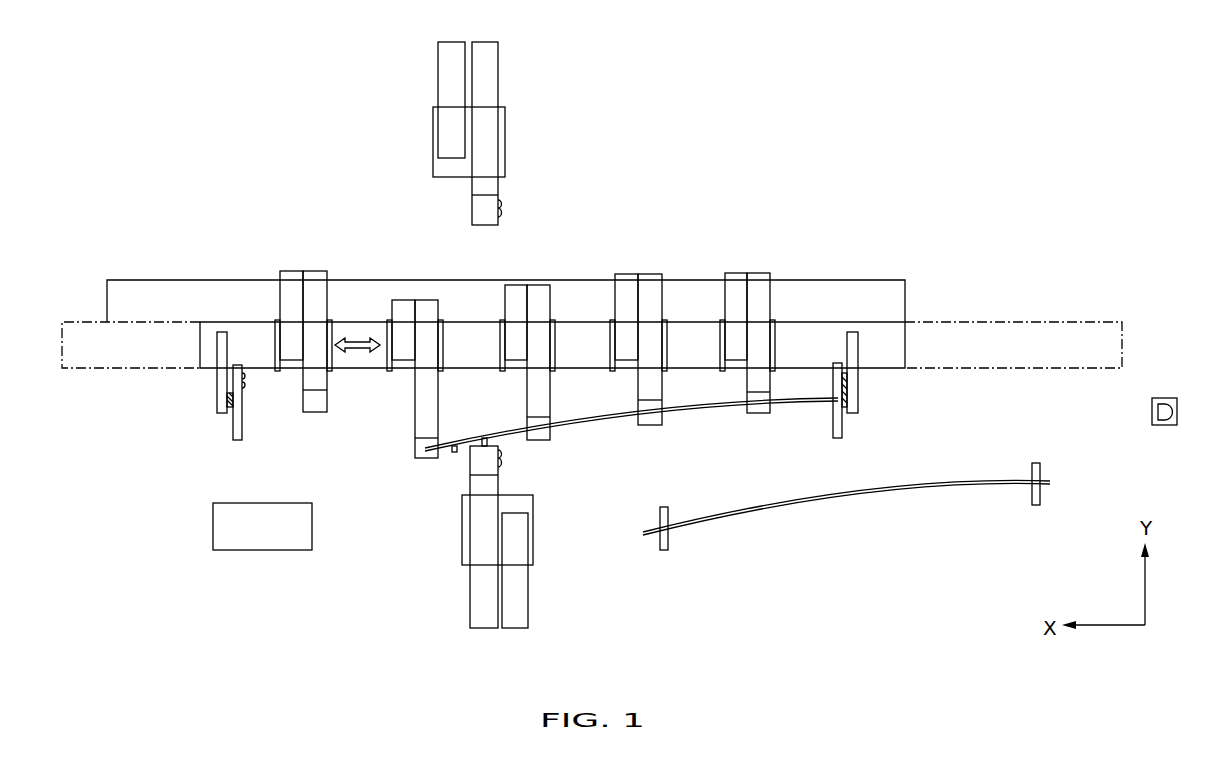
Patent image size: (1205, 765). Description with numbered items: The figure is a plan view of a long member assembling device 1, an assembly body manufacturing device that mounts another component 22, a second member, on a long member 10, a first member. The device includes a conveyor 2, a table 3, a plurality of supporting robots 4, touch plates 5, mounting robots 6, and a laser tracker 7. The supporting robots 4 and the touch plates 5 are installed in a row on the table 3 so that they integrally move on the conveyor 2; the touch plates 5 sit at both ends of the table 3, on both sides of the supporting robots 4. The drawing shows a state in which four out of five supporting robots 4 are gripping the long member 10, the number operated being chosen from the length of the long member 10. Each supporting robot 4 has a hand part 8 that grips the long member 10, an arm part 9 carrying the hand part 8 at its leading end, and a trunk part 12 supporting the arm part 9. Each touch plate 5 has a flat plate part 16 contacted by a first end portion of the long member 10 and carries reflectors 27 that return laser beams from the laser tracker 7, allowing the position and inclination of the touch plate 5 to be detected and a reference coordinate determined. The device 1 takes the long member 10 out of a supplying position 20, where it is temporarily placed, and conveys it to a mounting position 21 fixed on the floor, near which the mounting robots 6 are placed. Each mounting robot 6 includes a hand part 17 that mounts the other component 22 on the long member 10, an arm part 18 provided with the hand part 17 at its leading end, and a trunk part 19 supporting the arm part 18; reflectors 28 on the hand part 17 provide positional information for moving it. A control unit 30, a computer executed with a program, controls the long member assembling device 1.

The long member assembling device 1 is at (785, 96).
The conveyor 2 is at (850, 290).
The table 3 is at (968, 322).
The supporting robot 4 is at (316, 257).
The touch plate 5 is at (223, 455).
The mounting robot 6 is at (521, 121).
The laser tracker 7 is at (1165, 404).
The hand part 8 is at (318, 413).
The arm part 9 is at (322, 299).
The long member 10 is at (703, 407).
The trunk part 12 is at (290, 371).
The flat plate part 16 is at (233, 421).
The hand part 17 is at (478, 205).
The arm part 18 is at (485, 73).
The trunk part 19 is at (437, 162).
The supplying position 20 is at (973, 459).
The mounting position 21 is at (480, 419).
The other component 22 is at (452, 453).
The reflector 27 is at (243, 383).
The reflector 28 is at (503, 205).
The control unit 30 is at (263, 553).